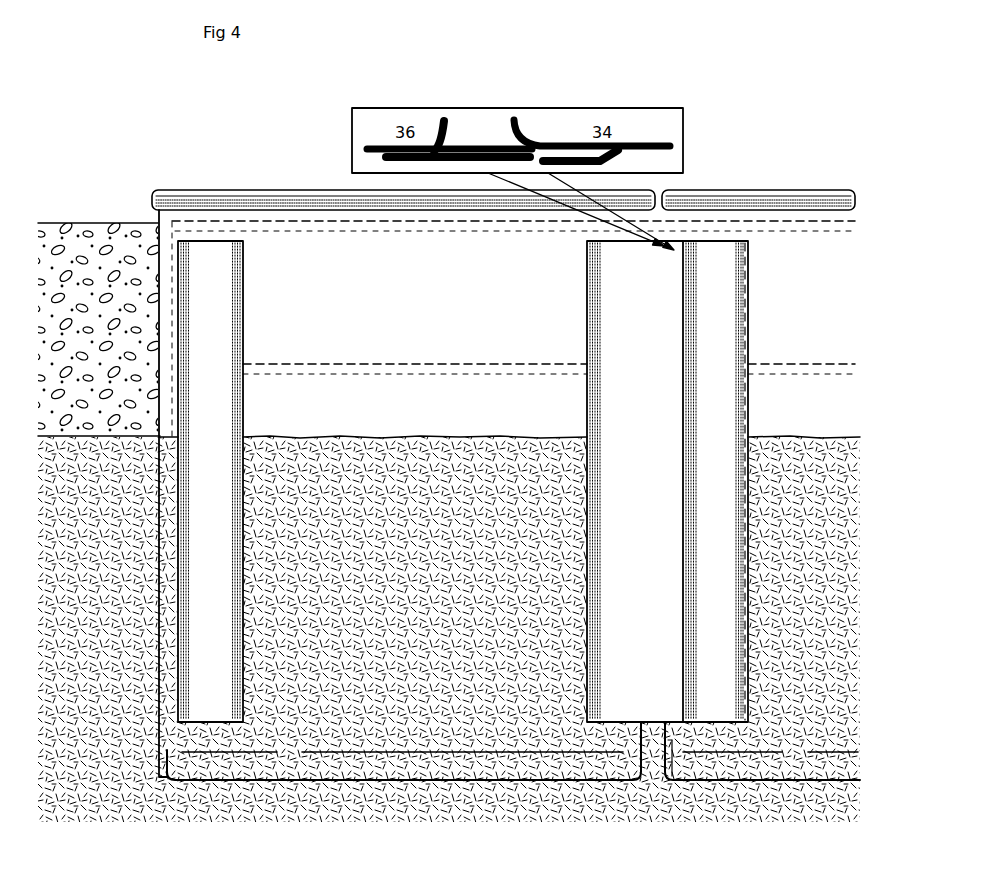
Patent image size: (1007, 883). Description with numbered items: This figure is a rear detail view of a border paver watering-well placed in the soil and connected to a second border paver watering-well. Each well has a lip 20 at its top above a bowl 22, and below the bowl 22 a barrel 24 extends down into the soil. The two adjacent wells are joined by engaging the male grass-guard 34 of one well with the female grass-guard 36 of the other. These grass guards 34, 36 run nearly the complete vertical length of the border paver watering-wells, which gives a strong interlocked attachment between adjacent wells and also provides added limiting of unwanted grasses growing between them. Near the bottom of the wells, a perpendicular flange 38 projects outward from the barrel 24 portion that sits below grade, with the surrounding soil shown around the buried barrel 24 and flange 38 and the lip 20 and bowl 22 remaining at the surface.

The lip 20 is at (152, 179).
The bowl 22 is at (333, 279).
The barrel 24 is at (384, 463).
The male grass-guard 34 is at (199, 516).
The female grass-guard 36 is at (621, 489).
The perpendicular flange 38 is at (707, 771).